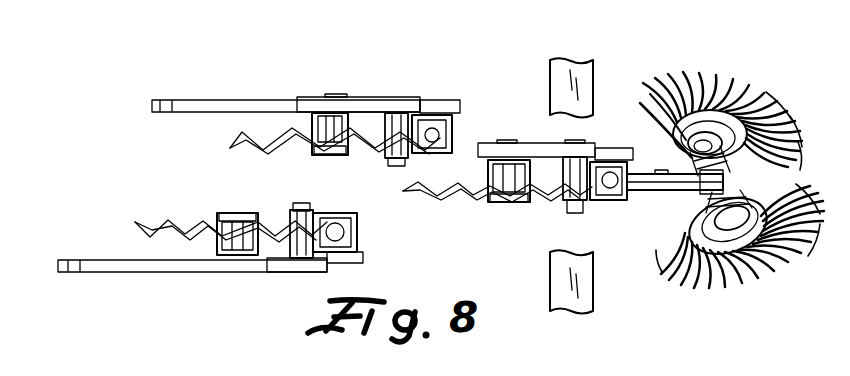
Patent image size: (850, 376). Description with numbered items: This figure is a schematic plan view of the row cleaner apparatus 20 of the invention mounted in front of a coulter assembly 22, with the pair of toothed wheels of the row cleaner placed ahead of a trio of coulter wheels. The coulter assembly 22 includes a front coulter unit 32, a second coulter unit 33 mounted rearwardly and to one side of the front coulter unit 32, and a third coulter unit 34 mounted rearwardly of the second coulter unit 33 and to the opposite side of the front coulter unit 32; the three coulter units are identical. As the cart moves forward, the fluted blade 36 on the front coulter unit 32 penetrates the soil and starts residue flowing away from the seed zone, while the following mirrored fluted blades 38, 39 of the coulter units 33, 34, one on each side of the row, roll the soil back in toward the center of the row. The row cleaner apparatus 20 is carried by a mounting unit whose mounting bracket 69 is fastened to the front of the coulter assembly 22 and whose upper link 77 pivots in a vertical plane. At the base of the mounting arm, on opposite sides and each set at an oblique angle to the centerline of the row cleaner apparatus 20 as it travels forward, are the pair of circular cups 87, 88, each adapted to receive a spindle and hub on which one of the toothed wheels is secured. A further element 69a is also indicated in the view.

The row cleaner apparatus 20 is at (766, 84).
The coulter assembly 22 is at (440, 86).
The front coulter unit 32 is at (506, 220).
The second coulter unit 33 is at (283, 64).
The third coulter unit 34 is at (170, 286).
The fluted blade 36 is at (457, 190).
The fluted blade 38 is at (276, 145).
The fluted blade 39 is at (147, 222).
The mounting bracket 69 is at (630, 202).
The mounting block 69a is at (405, 217).
The upper link 77 is at (672, 173).
The circular cup 87 is at (678, 212).
The circular cup 88 is at (686, 154).